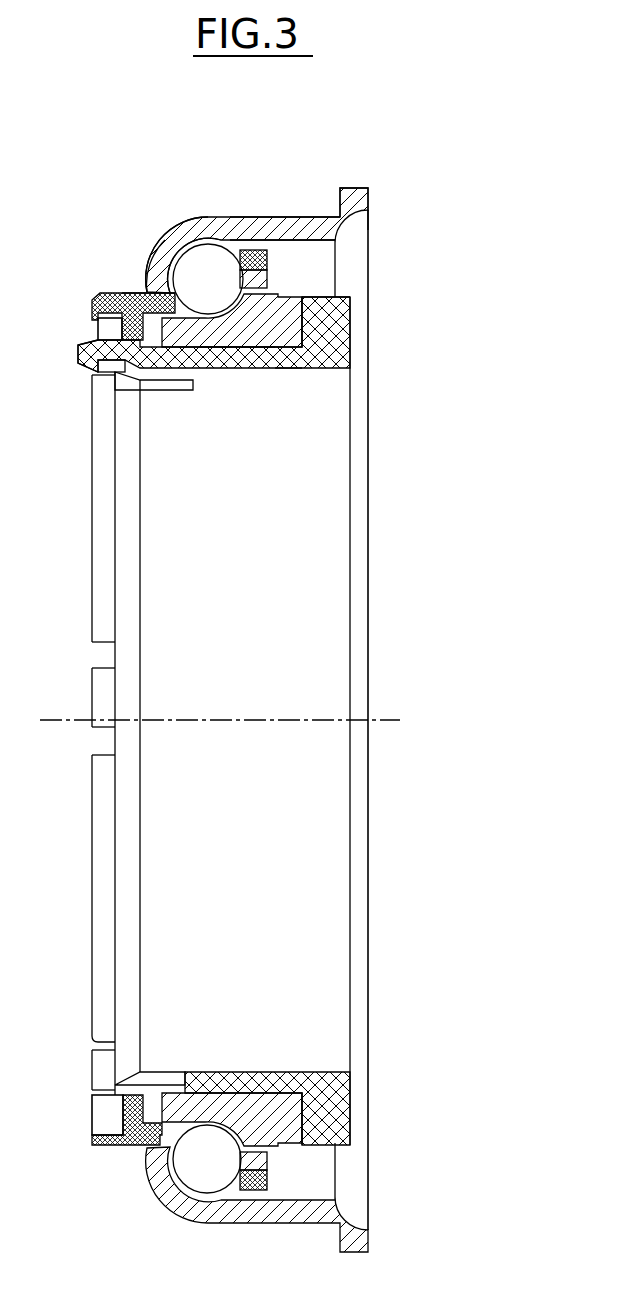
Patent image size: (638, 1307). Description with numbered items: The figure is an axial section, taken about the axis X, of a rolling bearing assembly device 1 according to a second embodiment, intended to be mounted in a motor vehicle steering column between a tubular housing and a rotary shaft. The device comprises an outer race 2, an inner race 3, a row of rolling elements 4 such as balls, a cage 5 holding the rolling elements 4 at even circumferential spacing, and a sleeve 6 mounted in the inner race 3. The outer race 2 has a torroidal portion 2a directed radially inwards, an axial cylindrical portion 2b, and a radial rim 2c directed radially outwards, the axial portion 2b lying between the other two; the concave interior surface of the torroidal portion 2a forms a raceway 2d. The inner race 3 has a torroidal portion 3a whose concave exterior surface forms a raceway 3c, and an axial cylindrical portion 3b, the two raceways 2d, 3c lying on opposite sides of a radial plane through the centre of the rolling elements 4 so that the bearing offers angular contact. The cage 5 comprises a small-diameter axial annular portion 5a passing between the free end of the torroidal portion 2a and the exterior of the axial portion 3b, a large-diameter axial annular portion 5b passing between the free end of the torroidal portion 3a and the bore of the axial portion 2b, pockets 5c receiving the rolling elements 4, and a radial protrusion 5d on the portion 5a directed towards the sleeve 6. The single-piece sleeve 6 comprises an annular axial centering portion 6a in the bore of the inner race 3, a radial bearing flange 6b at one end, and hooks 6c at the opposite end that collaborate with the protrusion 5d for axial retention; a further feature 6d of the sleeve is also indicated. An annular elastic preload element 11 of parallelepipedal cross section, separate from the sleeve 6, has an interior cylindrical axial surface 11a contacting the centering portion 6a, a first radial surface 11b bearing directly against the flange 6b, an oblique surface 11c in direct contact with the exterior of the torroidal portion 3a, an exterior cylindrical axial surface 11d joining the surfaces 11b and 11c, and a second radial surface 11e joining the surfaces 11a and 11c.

The rolling bearing assembly device 1 is at (416, 181).
The outer race 2 is at (263, 216).
The torroidal portion 2a is at (155, 255).
The axial portion 2b is at (315, 216).
The radial rim 2c is at (350, 188).
The raceway 2d is at (184, 232).
The inner race 3 is at (272, 290).
The torroidal portion 3a is at (262, 370).
The axial cylindrical portion 3b is at (213, 370).
The raceway 3c is at (240, 370).
The rolling elements 4 is at (218, 292).
The cage 5 is at (114, 292).
The axial annular portion of small diameter 5a is at (140, 292).
The axial annular portion of large diameter 5b is at (258, 270).
The pockets 5c is at (245, 250).
The radial protrusion 5d is at (100, 318).
The sleeve 6 is at (350, 351).
The annular axial centering portion 6a is at (282, 370).
The radial bearing flange 6b is at (338, 320).
The hooks 6c is at (78, 347).
The bearing holder top surface 6d is at (352, 297).
The elastic preload element 11 is at (352, 1072).
The interior cylindrical axial surface 11a is at (290, 1072).
The first radial surface 11b is at (340, 1120).
The oblique surface 11c is at (268, 1180).
The exterior cylindrical axial surface 11d is at (268, 1162).
The second radial surface 11e is at (228, 1080).
The axial axis X is at (229, 721).